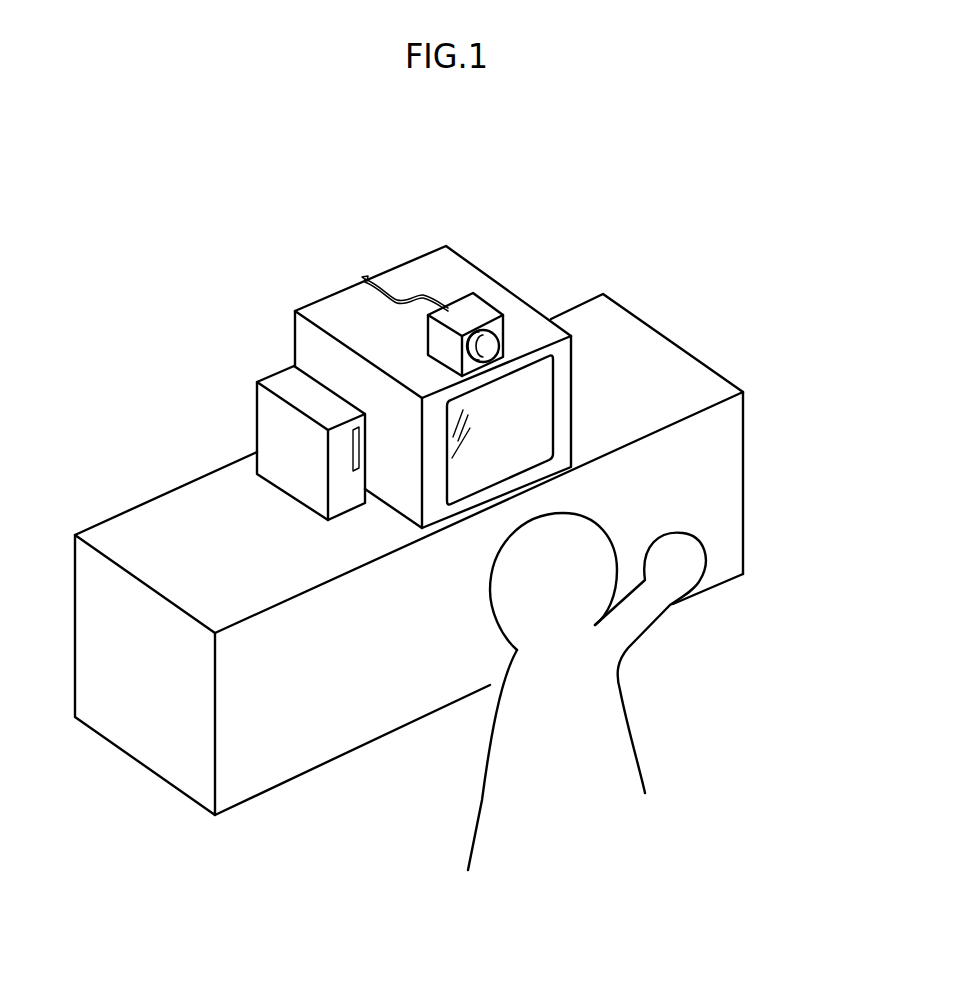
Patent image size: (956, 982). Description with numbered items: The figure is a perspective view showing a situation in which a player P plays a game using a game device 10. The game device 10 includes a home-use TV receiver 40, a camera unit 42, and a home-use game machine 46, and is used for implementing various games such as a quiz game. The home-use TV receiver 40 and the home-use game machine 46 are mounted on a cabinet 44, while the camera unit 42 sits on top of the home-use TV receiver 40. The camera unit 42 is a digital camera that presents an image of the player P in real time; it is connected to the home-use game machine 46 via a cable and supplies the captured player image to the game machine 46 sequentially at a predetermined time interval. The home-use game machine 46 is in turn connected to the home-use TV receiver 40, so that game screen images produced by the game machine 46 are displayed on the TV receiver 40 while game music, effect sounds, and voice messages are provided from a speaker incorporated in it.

The game device 10 is at (394, 354).
The home-use TV receiver 40 is at (294, 340).
The camera unit 42 is at (488, 302).
The cabinet 44 is at (677, 344).
The home-use game machine 46 is at (257, 401).
The player P is at (630, 718).